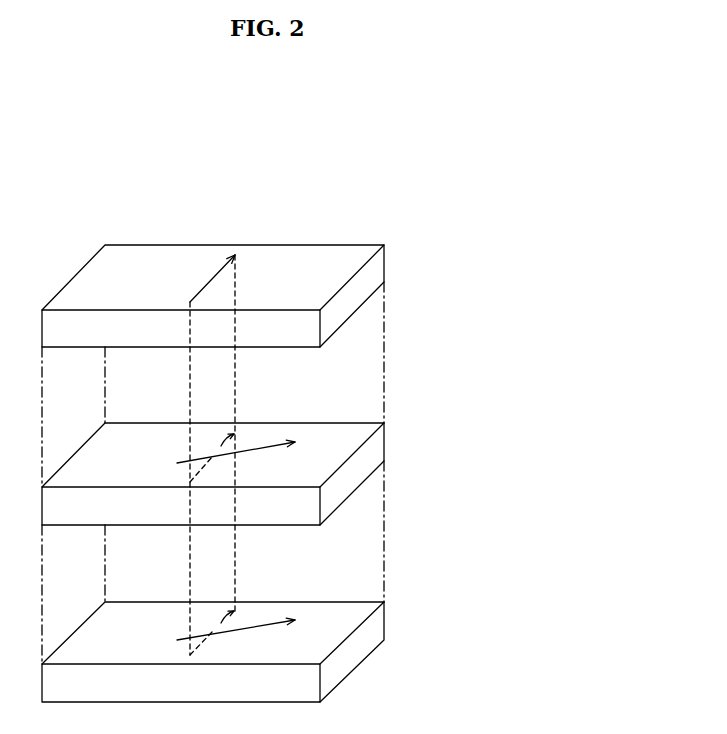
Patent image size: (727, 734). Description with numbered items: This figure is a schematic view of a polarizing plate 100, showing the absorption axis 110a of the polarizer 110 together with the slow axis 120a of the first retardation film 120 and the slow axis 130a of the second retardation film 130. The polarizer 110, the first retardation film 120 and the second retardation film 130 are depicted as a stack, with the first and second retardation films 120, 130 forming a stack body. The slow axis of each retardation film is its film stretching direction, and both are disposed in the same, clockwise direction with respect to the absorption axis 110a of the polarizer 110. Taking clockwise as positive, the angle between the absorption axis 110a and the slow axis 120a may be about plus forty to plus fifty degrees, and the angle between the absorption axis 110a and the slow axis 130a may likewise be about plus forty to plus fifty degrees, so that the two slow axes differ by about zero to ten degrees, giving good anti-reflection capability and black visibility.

The polarizing plate 100 is at (372, 203).
The polarizer 110 is at (383, 268).
The absorption axis of the polarizer 110a is at (212, 280).
The first retardation film 120 is at (383, 445).
The slow axis of the first retardation film 120a is at (273, 445).
The second retardation film 130 is at (383, 622).
The slow axis of the second retardation film 130a is at (273, 620).